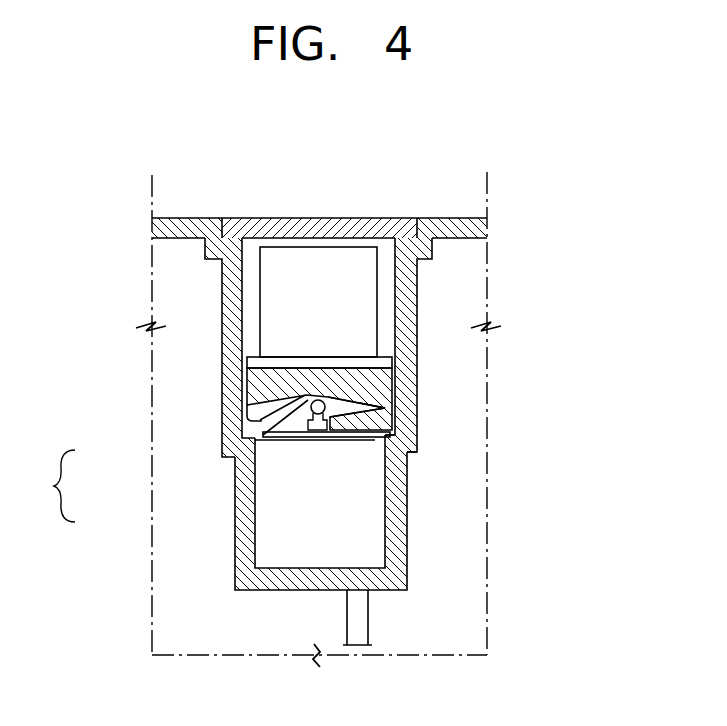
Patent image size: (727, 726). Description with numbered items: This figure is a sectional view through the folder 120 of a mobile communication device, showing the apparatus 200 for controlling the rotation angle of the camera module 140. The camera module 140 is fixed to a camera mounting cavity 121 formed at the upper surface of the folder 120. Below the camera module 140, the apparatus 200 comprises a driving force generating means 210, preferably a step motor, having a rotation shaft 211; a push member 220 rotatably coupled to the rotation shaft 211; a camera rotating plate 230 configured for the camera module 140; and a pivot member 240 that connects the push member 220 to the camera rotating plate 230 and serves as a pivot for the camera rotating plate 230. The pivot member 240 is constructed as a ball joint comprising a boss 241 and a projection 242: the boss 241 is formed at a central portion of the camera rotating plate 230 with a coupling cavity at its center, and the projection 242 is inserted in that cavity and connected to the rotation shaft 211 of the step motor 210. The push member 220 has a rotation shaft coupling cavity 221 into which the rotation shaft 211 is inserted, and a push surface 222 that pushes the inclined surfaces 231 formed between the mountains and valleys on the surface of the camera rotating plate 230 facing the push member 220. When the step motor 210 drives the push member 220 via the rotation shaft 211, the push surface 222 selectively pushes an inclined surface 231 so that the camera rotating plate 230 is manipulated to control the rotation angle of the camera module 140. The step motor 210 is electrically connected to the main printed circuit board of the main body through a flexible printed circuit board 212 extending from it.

The folder 120 is at (472, 228).
The camera mounting cavity 121 is at (385, 293).
The camera module 140 is at (318, 270).
The apparatus for controlling a rotation angle of a camera module 200 is at (522, 258).
The driving force generating means 210 is at (372, 512).
The rotation shaft 211 is at (347, 441).
The flexible printed circuit board 212 is at (363, 617).
The push member 220 is at (383, 418).
The rotation shaft coupling cavity 221 is at (315, 413).
The push surface 222 is at (386, 407).
The camera rotating plate 230 is at (248, 390).
The inclined surfaces 231 is at (247, 429).
The pivot member 240 is at (50, 486).
The boss 241 is at (290, 440).
The projection 242 is at (318, 443).